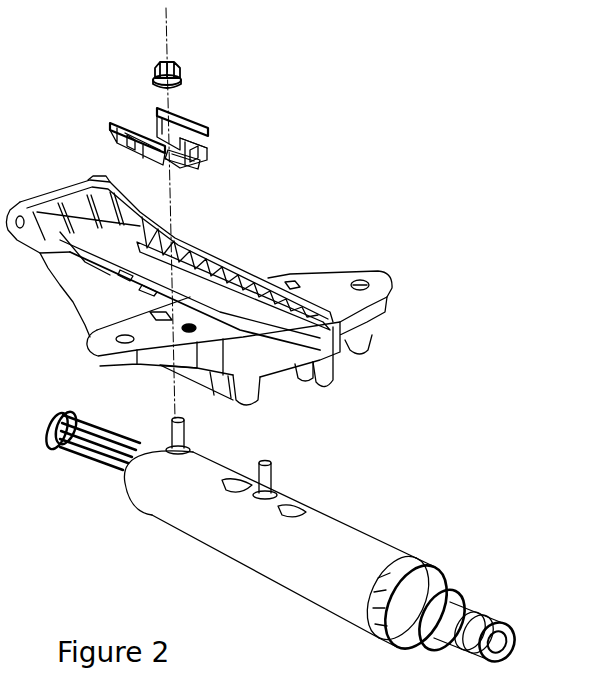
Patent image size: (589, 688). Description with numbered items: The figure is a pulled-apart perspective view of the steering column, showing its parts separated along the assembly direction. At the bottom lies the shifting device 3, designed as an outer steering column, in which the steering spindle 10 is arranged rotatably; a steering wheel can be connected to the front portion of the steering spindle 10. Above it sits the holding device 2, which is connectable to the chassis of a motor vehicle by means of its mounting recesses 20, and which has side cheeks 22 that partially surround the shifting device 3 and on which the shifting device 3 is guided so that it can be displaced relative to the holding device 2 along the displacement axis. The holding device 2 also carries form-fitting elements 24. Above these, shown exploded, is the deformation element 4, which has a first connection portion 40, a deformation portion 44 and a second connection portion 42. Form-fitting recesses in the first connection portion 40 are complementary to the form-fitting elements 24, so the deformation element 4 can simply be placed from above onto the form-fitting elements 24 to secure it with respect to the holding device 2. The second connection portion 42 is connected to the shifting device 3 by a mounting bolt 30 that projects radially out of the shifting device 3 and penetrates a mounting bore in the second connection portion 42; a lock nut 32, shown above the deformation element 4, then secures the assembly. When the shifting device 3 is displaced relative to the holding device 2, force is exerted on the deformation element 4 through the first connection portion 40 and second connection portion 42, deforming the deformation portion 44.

The deformation element 4 is at (106, 62).
The lock nut 32 is at (180, 72).
The first connection portion 40 is at (189, 118).
The deformation portion 44 is at (204, 146).
The second connection portion 42 is at (190, 163).
The holding device 2 is at (323, 290).
The form-fitting elements 24 is at (138, 270).
The mounting recesses 20 is at (360, 282).
The side cheeks 22 is at (243, 388).
The shifting device 3 is at (315, 532).
The mounting bolt 30 is at (267, 487).
The steering spindle 10 is at (454, 617).